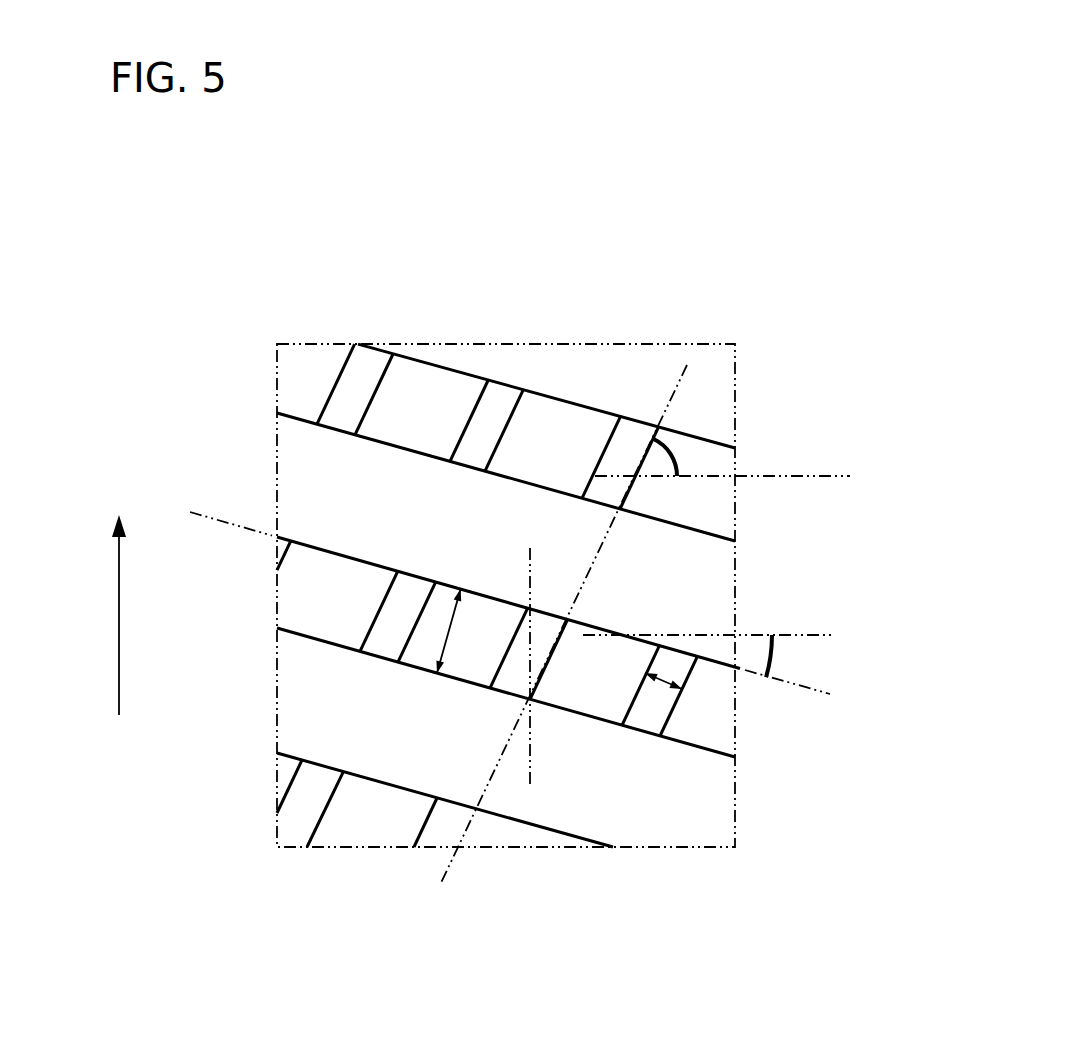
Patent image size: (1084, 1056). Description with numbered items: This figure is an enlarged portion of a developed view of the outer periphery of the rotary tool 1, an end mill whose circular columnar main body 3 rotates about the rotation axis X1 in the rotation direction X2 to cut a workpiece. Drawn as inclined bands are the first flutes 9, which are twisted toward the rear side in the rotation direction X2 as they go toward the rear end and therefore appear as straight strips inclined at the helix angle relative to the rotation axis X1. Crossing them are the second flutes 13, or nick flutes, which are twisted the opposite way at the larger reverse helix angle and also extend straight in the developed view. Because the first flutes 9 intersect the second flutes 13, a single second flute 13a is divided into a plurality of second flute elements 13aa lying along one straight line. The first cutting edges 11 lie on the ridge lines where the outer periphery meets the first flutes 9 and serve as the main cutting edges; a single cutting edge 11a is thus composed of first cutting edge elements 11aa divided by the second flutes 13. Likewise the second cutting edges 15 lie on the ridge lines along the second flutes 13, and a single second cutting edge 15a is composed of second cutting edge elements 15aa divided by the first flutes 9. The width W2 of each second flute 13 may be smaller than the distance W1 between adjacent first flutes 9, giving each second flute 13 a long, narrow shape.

The rotary tool 1 is at (780, 172).
The main body 3 is at (713, 393).
The first flutes 9 is at (352, 507).
The first cutting edges 11 is at (492, 563).
The single cutting edge 11a is at (492, 548).
The first cutting edge elements 11aa is at (485, 594).
The second flutes 13 is at (432, 549).
The single second flute 13a is at (376, 492).
The second flute elements 13aa is at (468, 421).
The second cutting edges 15 is at (417, 601).
The single second cutting edge 15a is at (482, 573).
The second cutting edge elements 15aa is at (507, 432).
The distance between adjacent first flutes W1 is at (440, 645).
The width of second flute W2 is at (667, 690).
The rotation axis X1 is at (670, 625).
The rotation direction X2 is at (114, 594).